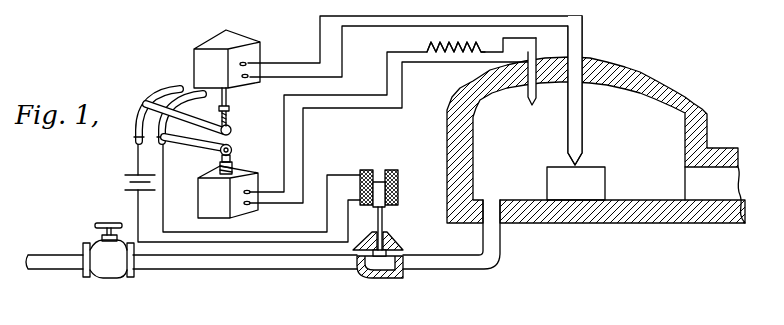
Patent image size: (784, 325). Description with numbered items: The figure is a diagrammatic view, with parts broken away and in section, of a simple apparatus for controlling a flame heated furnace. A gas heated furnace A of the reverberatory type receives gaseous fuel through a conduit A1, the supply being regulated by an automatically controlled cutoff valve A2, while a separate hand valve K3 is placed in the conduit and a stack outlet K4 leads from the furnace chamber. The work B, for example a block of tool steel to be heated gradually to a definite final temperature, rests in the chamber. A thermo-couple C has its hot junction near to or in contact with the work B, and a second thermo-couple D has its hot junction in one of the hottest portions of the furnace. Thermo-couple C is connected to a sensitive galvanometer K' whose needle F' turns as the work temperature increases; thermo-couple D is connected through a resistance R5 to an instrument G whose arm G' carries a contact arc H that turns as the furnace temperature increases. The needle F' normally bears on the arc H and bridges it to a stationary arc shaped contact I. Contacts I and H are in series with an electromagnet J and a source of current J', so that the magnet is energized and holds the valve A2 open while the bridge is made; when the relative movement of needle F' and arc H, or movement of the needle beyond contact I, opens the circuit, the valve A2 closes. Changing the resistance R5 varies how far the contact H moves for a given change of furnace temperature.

The furnace A is at (690, 90).
The conduit A1 is at (460, 266).
The cutoff valve A2 is at (393, 235).
The work B is at (576, 183).
The thermo-couple C is at (580, 161).
The second thermo-couple D is at (528, 101).
The resistance R5 is at (454, 52).
The galvanometer K' is at (242, 58).
The contact arc H is at (187, 92).
The stationary arc shaped contact I is at (143, 103).
The needle F' is at (240, 107).
The galvanometer instrument G is at (216, 192).
The arm G' is at (159, 154).
The electromagnet J is at (391, 209).
The source of current J' is at (115, 181).
The hand valve K3 is at (107, 274).
The stack outlet K4 is at (715, 191).